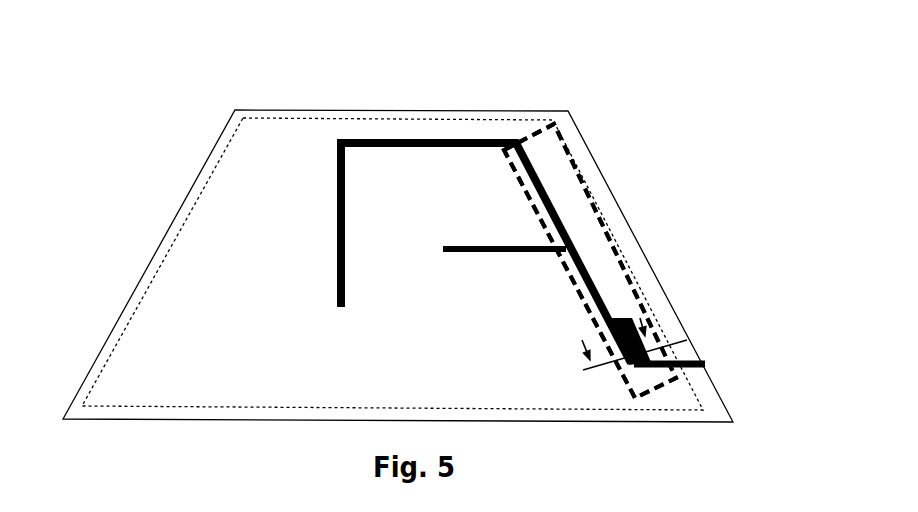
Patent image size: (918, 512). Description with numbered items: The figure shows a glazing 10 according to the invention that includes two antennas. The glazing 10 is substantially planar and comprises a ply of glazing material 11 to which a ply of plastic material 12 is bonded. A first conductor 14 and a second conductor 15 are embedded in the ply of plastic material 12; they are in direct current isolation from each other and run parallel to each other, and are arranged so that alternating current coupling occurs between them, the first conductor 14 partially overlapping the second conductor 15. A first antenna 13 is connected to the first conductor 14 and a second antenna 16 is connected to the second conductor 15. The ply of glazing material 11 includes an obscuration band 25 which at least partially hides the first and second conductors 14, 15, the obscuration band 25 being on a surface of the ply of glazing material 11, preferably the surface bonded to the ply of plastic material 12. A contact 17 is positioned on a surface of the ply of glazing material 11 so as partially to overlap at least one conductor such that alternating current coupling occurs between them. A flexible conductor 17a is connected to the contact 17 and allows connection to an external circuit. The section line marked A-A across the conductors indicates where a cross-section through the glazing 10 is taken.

The glazing 10 is at (616, 100).
The ply of glazing material 11 is at (598, 137).
The ply of plastic material 12 is at (601, 177).
The obscuration band 25 is at (616, 222).
The first antenna 13 is at (331, 196).
The second antenna 16 is at (434, 238).
The first conductor 14 is at (609, 277).
The contact 17 is at (660, 348).
The flexible conductor 17a is at (717, 361).
The second conductor 15 is at (655, 378).